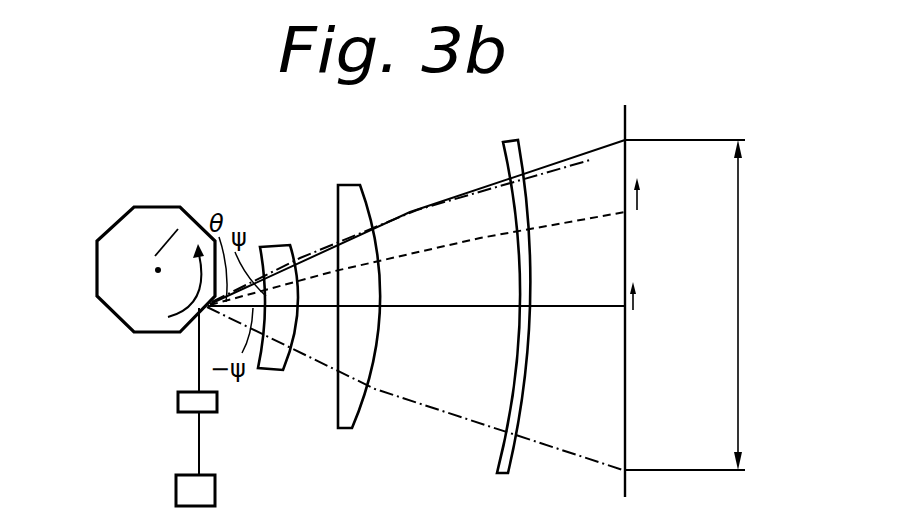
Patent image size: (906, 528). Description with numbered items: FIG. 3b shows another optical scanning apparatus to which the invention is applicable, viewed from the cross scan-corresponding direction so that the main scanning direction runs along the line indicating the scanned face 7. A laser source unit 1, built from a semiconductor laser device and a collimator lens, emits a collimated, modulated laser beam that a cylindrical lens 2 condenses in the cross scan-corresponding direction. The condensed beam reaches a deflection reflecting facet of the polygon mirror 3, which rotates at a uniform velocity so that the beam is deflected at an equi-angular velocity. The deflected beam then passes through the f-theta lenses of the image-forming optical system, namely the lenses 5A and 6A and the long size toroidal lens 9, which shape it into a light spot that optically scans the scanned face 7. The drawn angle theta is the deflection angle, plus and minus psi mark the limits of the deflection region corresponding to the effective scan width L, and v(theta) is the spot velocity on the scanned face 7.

The laser source unit 1 is at (178, 483).
The cylindrical lens 2 is at (178, 398).
The polygon mirror 3 is at (122, 309).
The lens 5A is at (270, 371).
The lens 6A is at (342, 428).
The scanned face 7 is at (627, 109).
The long size toroidal lens 9 is at (508, 143).